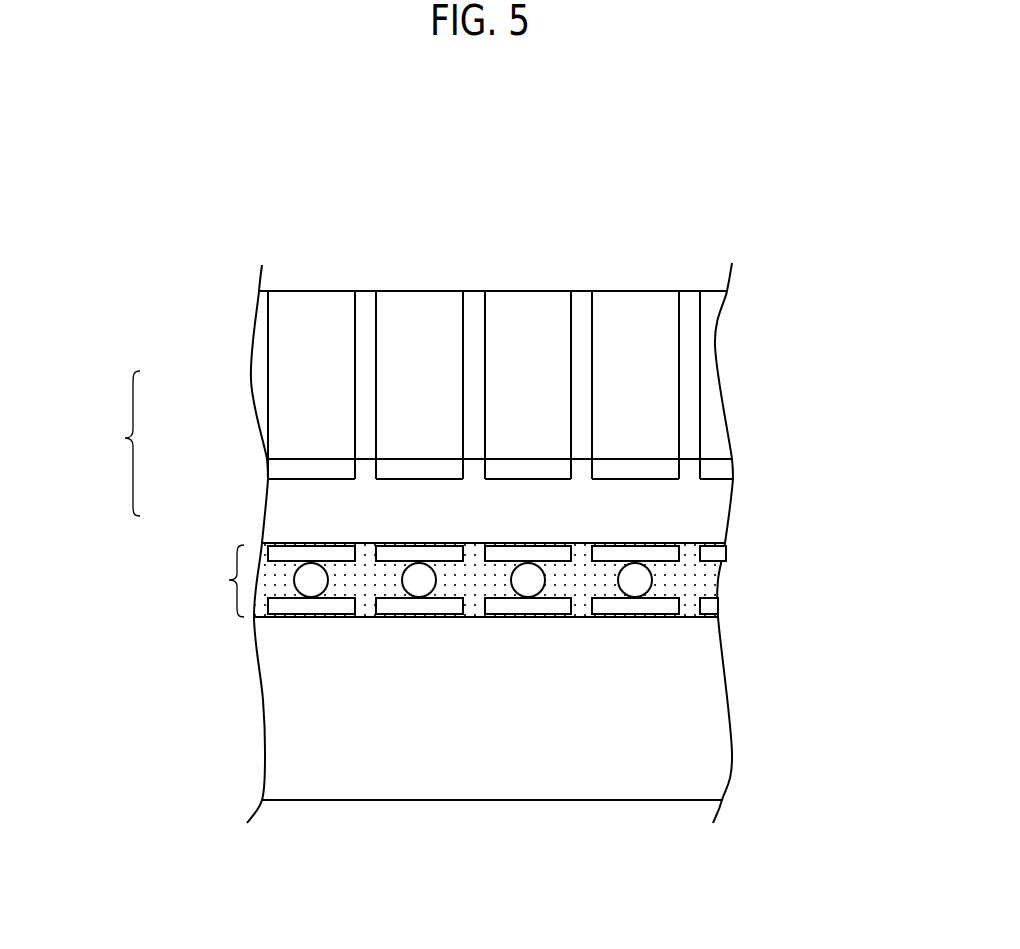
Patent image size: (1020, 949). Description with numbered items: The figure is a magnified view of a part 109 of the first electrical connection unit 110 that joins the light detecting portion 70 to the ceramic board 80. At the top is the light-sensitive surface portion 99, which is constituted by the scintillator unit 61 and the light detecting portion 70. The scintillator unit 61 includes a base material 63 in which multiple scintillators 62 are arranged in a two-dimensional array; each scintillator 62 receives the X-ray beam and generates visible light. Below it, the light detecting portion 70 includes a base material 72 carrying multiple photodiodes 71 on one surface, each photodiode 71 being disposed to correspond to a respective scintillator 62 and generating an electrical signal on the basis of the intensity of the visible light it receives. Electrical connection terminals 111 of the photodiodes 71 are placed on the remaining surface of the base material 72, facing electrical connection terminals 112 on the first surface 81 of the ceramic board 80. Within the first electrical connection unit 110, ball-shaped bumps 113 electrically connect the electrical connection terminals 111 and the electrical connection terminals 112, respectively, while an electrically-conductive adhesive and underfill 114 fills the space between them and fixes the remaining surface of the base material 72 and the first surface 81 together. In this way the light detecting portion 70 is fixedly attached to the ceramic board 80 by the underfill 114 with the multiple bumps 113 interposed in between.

The part of the first electrical connection unit 109 is at (455, 817).
The light-sensitive surface portion 99 is at (116, 443).
The scintillator unit 61 is at (250, 378).
The scintillator 62 is at (318, 300).
The base material 63 is at (693, 300).
The light detecting portion 70 is at (265, 513).
The photodiode 71 is at (328, 475).
The base material 72 is at (724, 502).
The first electrical connection unit 110 is at (453, 647).
The electrical connection terminal 111 is at (778, 210).
The electrical connection terminal 112 is at (330, 609).
The bump 113 is at (303, 587).
The underfill 114 is at (583, 587).
The first surface 81 is at (684, 613).
The ceramic board 80 is at (262, 703).